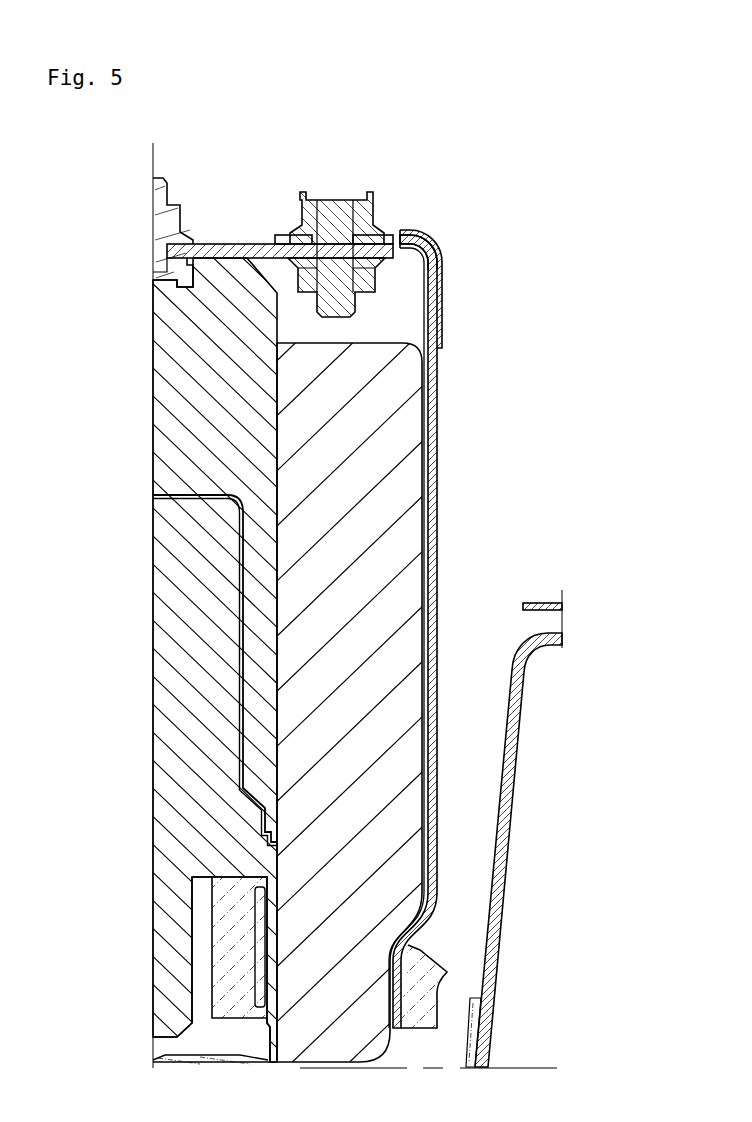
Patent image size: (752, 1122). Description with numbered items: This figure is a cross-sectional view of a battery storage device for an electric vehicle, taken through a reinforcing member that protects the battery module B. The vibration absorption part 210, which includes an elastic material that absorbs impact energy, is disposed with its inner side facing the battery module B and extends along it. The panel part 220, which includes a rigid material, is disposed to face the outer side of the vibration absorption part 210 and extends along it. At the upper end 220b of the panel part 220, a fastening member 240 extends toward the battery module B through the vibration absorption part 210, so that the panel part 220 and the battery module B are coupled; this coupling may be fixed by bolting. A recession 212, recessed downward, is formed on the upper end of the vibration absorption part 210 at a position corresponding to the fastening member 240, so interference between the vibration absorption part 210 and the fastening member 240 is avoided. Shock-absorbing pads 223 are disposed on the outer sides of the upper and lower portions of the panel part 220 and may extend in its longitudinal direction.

The battery module B is at (185, 412).
The fastening member 240 is at (238, 250).
The upper end of the panel part 220b is at (388, 238).
The shock-absorbing pad 223 is at (440, 282).
The recession 212 is at (378, 343).
The vibration absorption part 210 is at (370, 427).
The panel part 220 is at (471, 572).